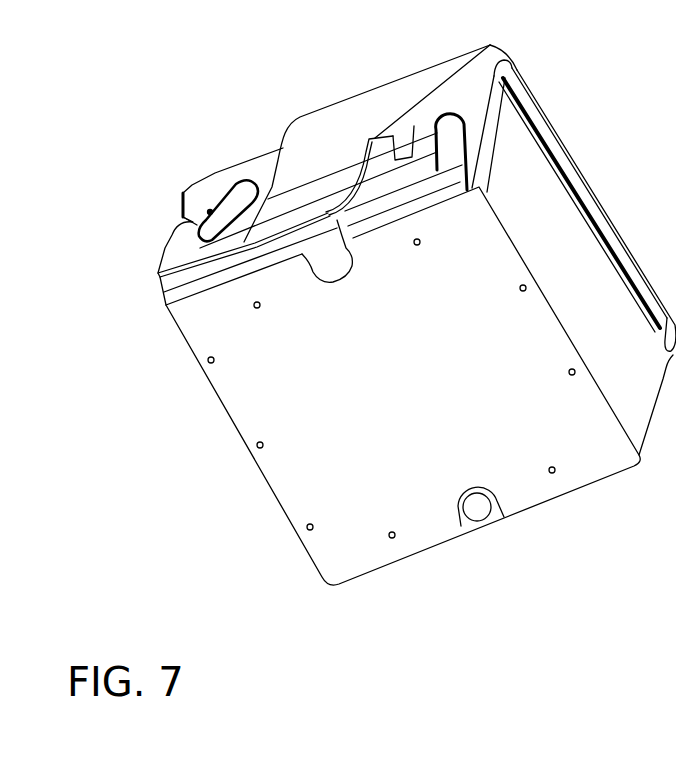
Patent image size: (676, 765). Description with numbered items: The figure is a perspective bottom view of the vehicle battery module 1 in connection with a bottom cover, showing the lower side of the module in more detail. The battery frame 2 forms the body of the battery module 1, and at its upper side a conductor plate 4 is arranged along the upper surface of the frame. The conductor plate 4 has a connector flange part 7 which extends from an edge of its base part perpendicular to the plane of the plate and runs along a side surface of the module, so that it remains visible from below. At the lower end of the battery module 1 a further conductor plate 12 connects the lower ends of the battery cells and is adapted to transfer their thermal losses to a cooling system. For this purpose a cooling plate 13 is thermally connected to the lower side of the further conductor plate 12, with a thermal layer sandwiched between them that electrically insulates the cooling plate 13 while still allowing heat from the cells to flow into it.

The battery module 1 is at (390, 327).
The battery frame 2 is at (286, 524).
The conductor plate 4 is at (311, 161).
The connector flange part 7 is at (207, 212).
The further conductor plate 12 is at (438, 182).
The cooling plate 13 is at (573, 485).